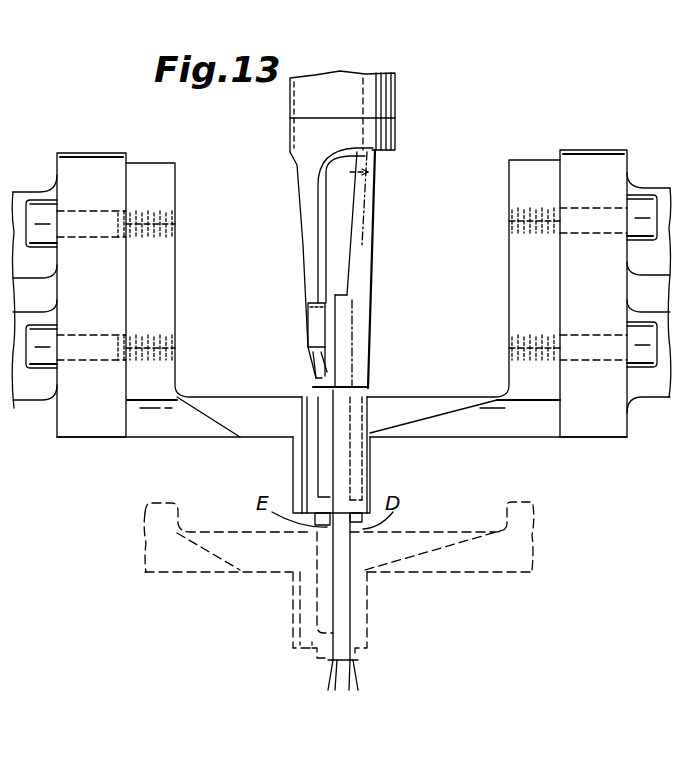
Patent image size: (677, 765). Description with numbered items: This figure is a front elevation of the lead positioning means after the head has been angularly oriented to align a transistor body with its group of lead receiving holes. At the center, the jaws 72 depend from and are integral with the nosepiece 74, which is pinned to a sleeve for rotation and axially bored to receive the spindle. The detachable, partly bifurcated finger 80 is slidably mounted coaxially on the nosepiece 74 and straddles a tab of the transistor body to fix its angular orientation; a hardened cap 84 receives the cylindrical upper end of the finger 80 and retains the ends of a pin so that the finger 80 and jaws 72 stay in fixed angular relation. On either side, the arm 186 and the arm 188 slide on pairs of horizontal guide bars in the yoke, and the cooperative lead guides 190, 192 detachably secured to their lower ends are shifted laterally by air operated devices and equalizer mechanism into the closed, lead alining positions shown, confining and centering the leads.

The jaws 72 is at (367, 345).
The nosepiece 74 is at (373, 227).
The orienting finger 80 is at (310, 327).
The cap 84 is at (395, 94).
The arm 186 is at (87, 152).
The arm 188 is at (590, 148).
The lead guide 190 is at (153, 440).
The lead guide 192 is at (527, 428).